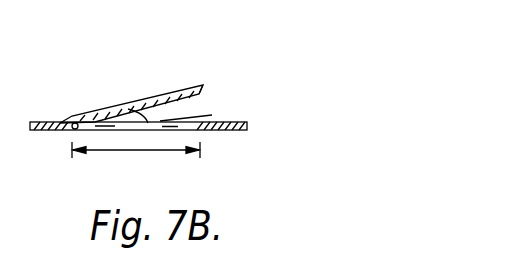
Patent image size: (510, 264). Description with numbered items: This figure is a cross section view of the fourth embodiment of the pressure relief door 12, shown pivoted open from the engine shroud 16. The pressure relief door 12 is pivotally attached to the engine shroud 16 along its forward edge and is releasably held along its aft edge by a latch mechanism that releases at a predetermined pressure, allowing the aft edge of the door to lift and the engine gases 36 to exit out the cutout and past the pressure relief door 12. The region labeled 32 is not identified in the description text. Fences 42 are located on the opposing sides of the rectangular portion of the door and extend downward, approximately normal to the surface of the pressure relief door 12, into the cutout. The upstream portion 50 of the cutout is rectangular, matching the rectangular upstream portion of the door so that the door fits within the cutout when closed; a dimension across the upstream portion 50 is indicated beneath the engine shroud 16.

The pressure relief door 12 is at (133, 103).
The engine shroud 16 is at (243, 130).
The free end of strip 32 is at (205, 88).
The engine gases 36 is at (210, 116).
The fences 42 is at (83, 131).
The upstream portion of the cutout 50 is at (120, 152).